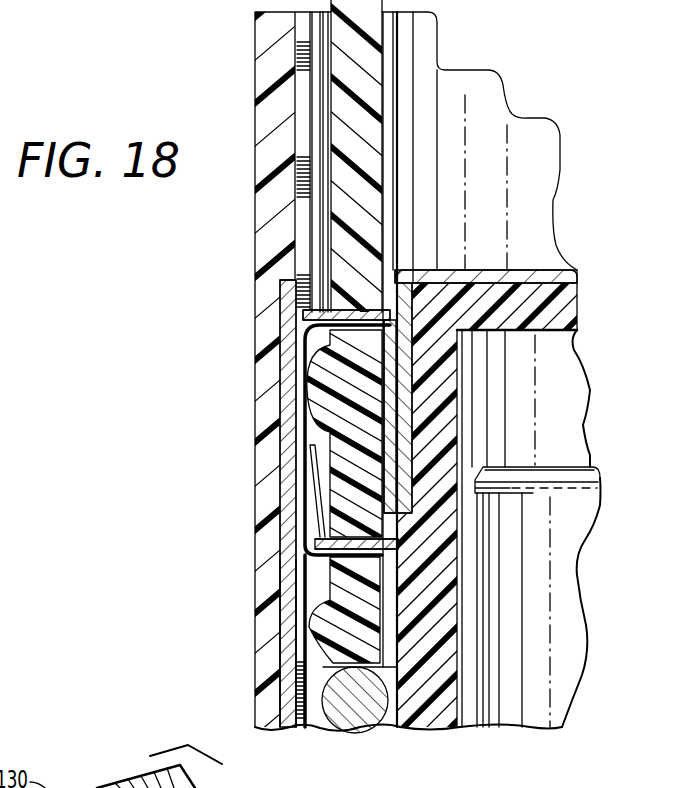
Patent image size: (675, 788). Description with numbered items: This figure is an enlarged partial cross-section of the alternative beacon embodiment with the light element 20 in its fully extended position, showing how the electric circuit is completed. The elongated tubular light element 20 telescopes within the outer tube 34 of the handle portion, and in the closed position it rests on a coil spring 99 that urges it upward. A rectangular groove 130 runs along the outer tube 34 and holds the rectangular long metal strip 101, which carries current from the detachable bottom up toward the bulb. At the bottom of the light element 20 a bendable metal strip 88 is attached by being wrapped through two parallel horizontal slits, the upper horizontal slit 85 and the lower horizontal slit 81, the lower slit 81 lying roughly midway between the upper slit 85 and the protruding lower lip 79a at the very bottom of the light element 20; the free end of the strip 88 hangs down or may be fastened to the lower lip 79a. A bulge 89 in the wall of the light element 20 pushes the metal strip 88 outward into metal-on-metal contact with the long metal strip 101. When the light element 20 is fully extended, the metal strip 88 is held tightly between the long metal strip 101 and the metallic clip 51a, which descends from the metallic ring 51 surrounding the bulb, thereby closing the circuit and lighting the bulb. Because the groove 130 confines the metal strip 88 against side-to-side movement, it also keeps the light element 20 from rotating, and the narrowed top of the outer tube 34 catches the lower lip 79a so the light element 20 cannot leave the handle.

The light element 20 is at (396, 70).
The outer tube 34 is at (293, 212).
The rectangular groove 130 is at (301, 225).
The upper horizontal slit 85 is at (283, 303).
The bendable metal strip 88 is at (372, 317).
The bulge 89 is at (320, 398).
The lower horizontal slit 81 is at (317, 553).
The long metal strip 101 is at (285, 614).
The lower lip 79a is at (329, 647).
The coil spring 99 is at (358, 723).
The metallic ring 51 is at (575, 275).
The metallic clip 51a is at (453, 443).